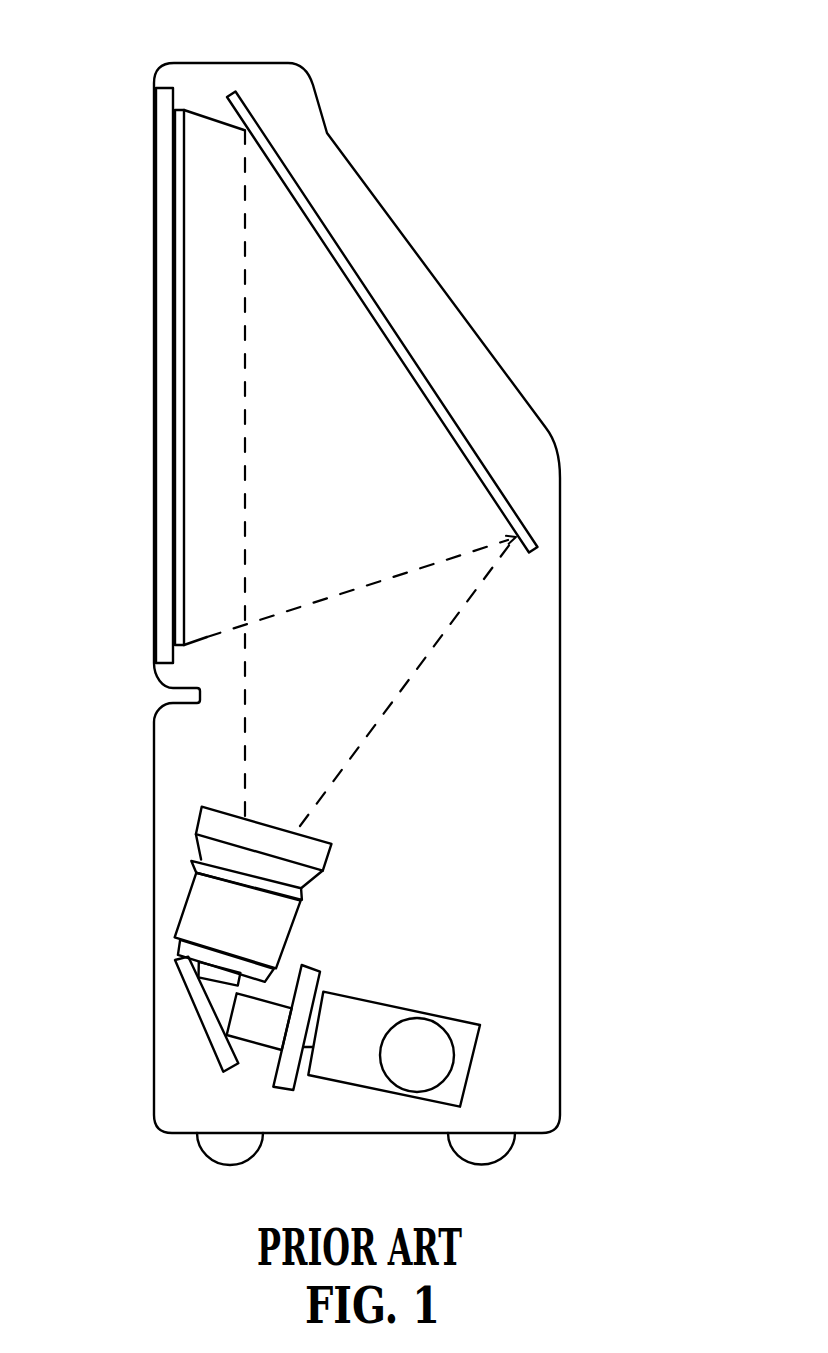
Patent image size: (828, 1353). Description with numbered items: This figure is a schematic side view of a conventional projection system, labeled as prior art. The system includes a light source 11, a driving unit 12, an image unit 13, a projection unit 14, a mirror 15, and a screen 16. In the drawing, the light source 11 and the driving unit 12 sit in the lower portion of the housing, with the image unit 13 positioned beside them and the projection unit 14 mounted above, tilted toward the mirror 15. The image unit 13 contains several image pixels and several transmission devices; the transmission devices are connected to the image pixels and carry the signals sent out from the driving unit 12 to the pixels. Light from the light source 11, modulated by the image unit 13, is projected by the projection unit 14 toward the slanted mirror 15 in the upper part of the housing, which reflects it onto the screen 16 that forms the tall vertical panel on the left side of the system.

The light source 11 is at (454, 1054).
The driving unit 12 is at (403, 1007).
The image unit 13 is at (276, 1078).
The projection unit 14 is at (196, 820).
The mirror 15 is at (380, 282).
The screen 16 is at (153, 301).